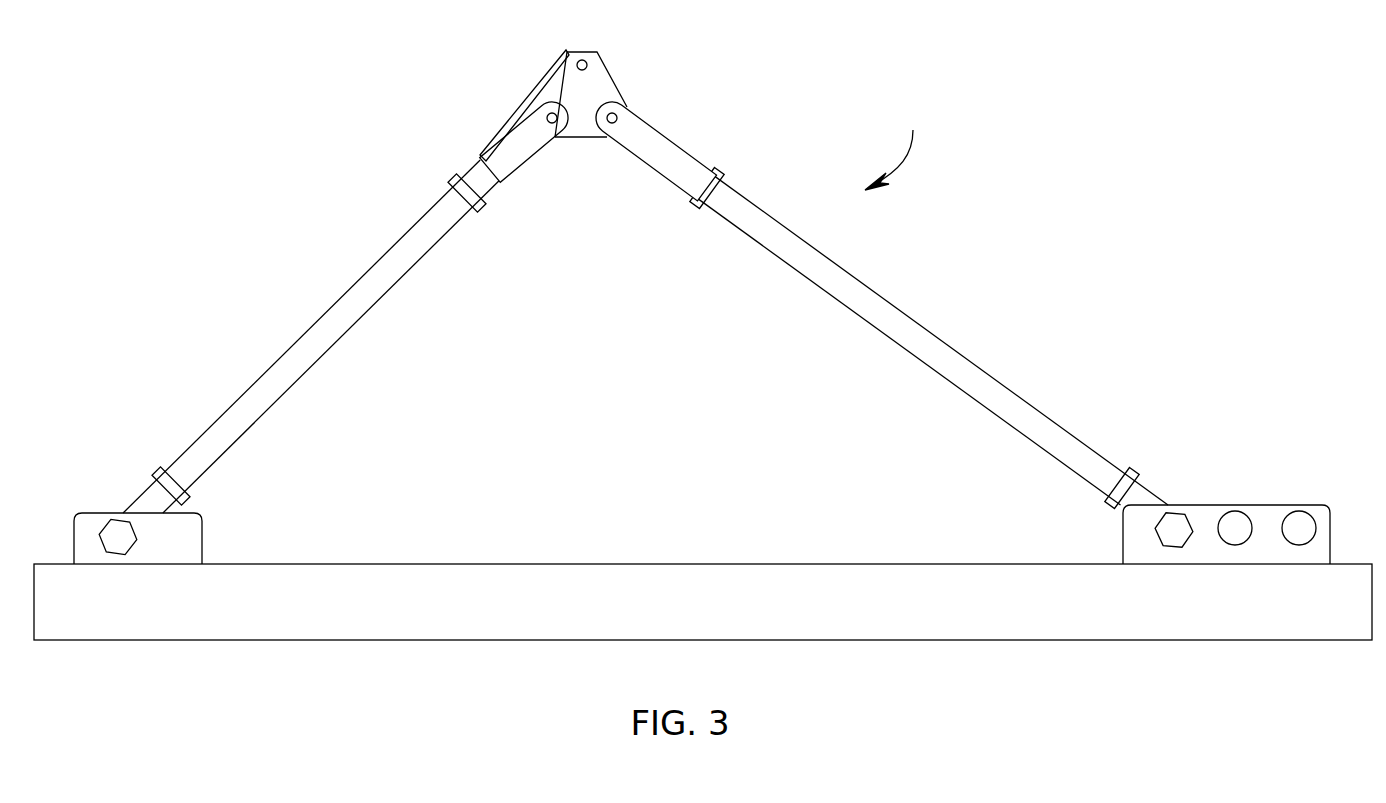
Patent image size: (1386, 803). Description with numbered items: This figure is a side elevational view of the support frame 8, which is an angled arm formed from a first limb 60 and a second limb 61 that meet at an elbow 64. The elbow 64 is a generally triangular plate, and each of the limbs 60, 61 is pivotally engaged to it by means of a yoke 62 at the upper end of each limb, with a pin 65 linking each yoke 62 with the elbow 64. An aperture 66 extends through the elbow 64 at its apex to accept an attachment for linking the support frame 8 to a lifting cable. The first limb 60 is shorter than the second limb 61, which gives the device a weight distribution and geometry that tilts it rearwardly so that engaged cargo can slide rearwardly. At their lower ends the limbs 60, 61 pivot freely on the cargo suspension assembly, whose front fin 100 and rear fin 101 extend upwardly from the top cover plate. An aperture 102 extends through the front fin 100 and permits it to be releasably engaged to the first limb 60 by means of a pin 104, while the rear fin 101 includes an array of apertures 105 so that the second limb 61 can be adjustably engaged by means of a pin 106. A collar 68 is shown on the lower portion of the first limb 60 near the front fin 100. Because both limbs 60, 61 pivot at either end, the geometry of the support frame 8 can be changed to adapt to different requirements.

The support frame 8 is at (897, 140).
The first limb 60 is at (320, 332).
The second limb 61 is at (950, 335).
The yoke 62 is at (513, 153).
The elbow 64 is at (598, 88).
The pin 65 is at (582, 127).
The aperture 66 is at (577, 64).
The collar 68 is at (147, 497).
The front fin 100 is at (190, 543).
The rear fin 101 is at (1203, 523).
The aperture 102 is at (147, 553).
The pin 104 is at (113, 533).
The apertures 105 is at (1235, 523).
The pin 106 is at (1163, 527).